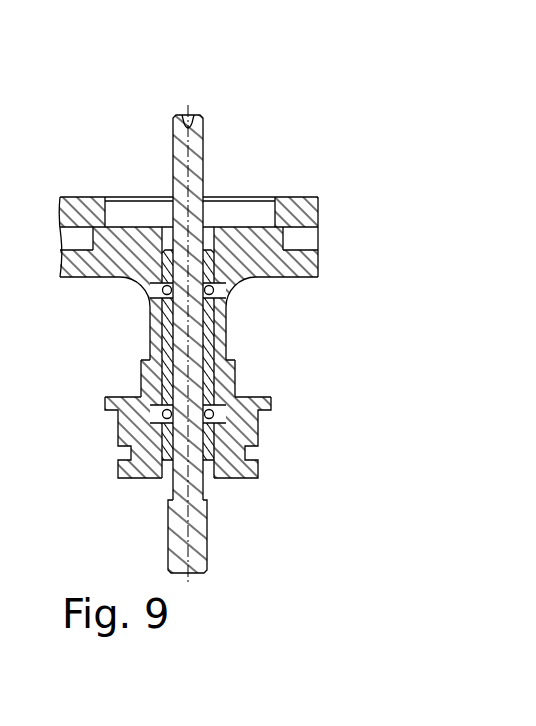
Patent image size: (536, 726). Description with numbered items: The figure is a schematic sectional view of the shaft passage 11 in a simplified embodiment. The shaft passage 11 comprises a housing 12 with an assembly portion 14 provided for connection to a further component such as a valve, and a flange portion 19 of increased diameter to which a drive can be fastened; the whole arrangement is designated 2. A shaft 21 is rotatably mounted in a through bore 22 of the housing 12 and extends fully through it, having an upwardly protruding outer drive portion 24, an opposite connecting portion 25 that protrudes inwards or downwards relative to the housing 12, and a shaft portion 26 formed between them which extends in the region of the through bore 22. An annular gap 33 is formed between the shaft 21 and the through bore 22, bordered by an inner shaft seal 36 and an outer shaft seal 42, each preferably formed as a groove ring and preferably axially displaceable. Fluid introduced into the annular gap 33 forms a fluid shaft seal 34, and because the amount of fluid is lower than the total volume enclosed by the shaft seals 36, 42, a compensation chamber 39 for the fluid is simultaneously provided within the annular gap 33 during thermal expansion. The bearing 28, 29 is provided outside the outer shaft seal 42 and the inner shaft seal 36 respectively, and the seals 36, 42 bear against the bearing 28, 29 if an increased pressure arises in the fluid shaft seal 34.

The tool assembly 2 is at (32, 237).
The shaft passage 11 is at (285, 127).
The housing 12 is at (305, 185).
The assembly portion 14 is at (101, 455).
The flange portion 19 is at (318, 208).
The shaft 21 is at (220, 136).
The through bore 22 is at (226, 319).
The drive portion 24 is at (174, 194).
The connecting portion 25 is at (172, 522).
The shaft portion 26 is at (178, 366).
The bearing 28 is at (210, 263).
The bearing 29 is at (213, 431).
The annular gap 33 is at (152, 338).
The fluid shaft seal 34 is at (244, 342).
The inner shaft seal 36 is at (207, 417).
The compensation chamber 39 is at (162, 301).
The outer shaft seal 42 is at (236, 291).